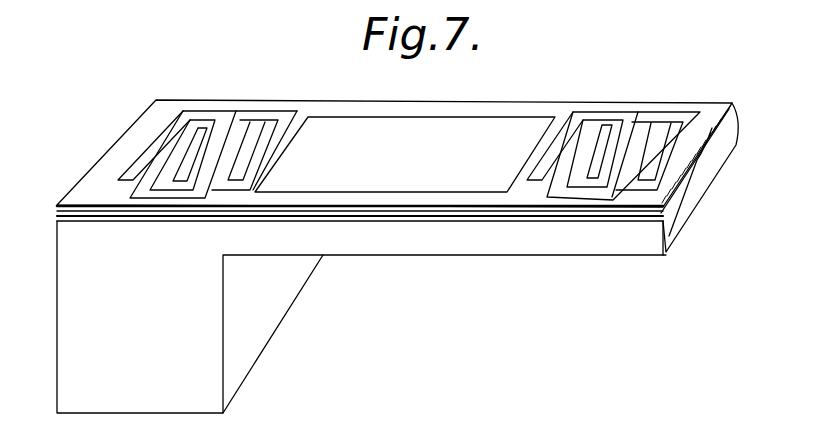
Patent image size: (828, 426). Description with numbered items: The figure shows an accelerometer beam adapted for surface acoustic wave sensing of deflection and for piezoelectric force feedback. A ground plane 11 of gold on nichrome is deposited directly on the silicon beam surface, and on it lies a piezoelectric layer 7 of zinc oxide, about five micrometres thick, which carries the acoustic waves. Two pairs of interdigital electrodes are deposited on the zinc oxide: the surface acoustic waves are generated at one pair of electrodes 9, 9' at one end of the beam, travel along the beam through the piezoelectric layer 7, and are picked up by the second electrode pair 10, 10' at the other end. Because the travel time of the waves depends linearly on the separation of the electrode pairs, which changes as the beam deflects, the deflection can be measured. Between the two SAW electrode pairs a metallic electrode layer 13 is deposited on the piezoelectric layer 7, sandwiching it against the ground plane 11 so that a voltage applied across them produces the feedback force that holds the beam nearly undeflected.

The piezoelectric layer 7 is at (357, 199).
The SAW electrode 9 is at (198, 143).
The SAW electrode 9' is at (183, 154).
The SAW electrode 10 is at (644, 156).
The SAW electrode 10' is at (658, 174).
The ground plane 11 is at (603, 219).
The metallic electrode layer 13 is at (472, 125).